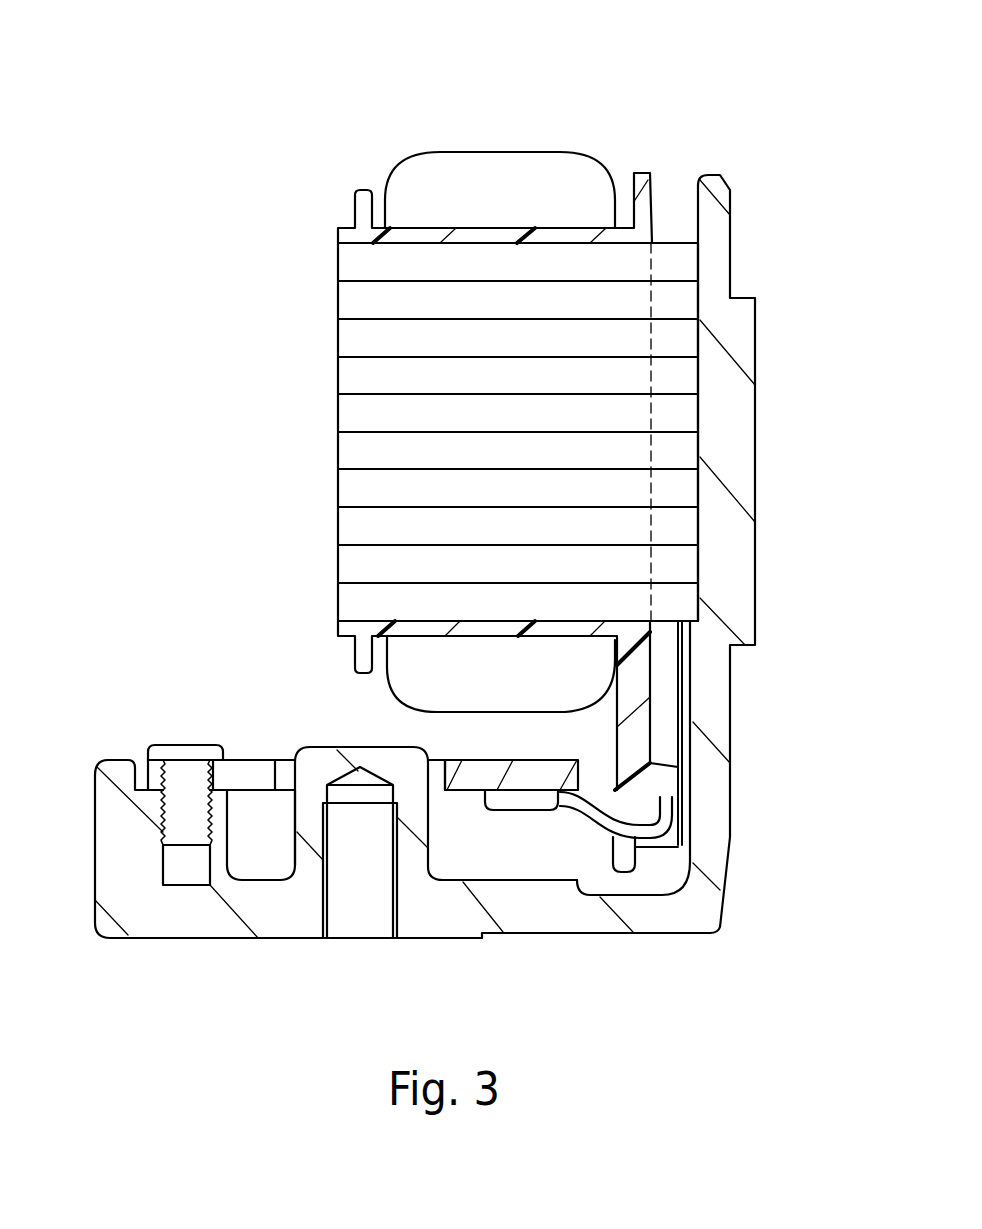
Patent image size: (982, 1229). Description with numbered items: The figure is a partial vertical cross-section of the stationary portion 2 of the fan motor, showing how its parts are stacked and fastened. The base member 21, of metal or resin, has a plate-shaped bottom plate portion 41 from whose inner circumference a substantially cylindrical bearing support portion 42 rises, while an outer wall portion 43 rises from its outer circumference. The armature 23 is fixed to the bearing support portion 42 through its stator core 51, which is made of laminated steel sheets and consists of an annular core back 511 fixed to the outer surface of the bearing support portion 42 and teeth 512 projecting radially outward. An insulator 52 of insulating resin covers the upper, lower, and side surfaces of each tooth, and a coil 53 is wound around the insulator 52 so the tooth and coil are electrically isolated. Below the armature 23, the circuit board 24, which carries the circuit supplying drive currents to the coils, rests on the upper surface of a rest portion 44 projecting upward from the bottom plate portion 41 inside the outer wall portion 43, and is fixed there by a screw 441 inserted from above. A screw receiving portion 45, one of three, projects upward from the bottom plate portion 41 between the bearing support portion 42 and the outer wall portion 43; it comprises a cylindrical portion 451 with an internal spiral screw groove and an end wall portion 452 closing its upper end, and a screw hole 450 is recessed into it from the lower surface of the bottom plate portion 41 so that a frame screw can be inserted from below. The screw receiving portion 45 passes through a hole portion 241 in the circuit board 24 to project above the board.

The stationary portion 2 is at (411, 100).
The base member 21 is at (222, 950).
The armature 23 is at (318, 375).
The circuit board 24 is at (535, 770).
The hole portion 241 is at (437, 778).
The bottom plate portion 41 is at (465, 912).
The bearing support portion 42 is at (727, 420).
The outer wall portion 43 is at (110, 810).
The rest portion 44 is at (148, 836).
The screw 441 is at (185, 775).
The screw receiving portion 45 is at (333, 655).
The screw hole 450 is at (360, 903).
The cylindrical portion 451 is at (265, 830).
The end wall portion 452 is at (385, 765).
The stator core 51 is at (697, 80).
The core back 511 is at (672, 380).
The teeth 512 is at (515, 380).
The insulator 52 is at (427, 233).
The coil 53 is at (478, 697).